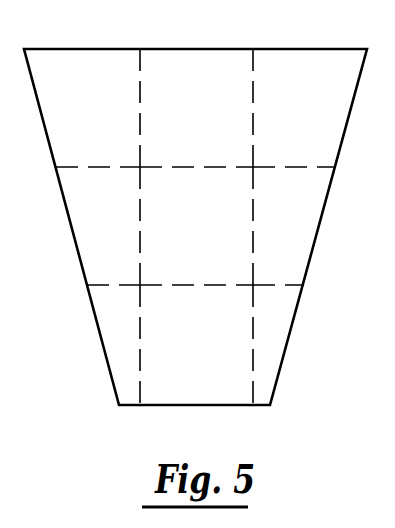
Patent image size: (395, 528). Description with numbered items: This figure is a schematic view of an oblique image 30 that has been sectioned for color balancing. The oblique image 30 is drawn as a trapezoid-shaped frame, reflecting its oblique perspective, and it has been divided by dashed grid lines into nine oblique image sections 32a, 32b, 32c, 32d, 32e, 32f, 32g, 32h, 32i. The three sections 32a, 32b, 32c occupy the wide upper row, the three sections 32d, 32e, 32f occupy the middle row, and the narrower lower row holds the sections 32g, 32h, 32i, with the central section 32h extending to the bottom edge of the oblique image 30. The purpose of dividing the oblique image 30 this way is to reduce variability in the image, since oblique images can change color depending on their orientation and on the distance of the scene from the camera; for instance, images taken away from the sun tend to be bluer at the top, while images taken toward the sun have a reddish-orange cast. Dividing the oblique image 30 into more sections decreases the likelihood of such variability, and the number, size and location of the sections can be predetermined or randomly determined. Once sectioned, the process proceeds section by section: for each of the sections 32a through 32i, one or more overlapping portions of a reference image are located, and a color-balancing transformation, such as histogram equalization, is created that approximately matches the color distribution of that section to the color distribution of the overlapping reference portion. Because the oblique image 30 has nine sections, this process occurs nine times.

The oblique image 30 is at (197, 49).
The oblique image section 32a is at (108, 97).
The oblique image section 32b is at (213, 97).
The oblique image section 32c is at (318, 97).
The oblique image section 32d is at (122, 216).
The oblique image section 32e is at (211, 216).
The oblique image section 32f is at (302, 216).
The oblique image section 32g is at (133, 298).
The oblique image section 32h is at (209, 336).
The oblique image section 32i is at (289, 298).